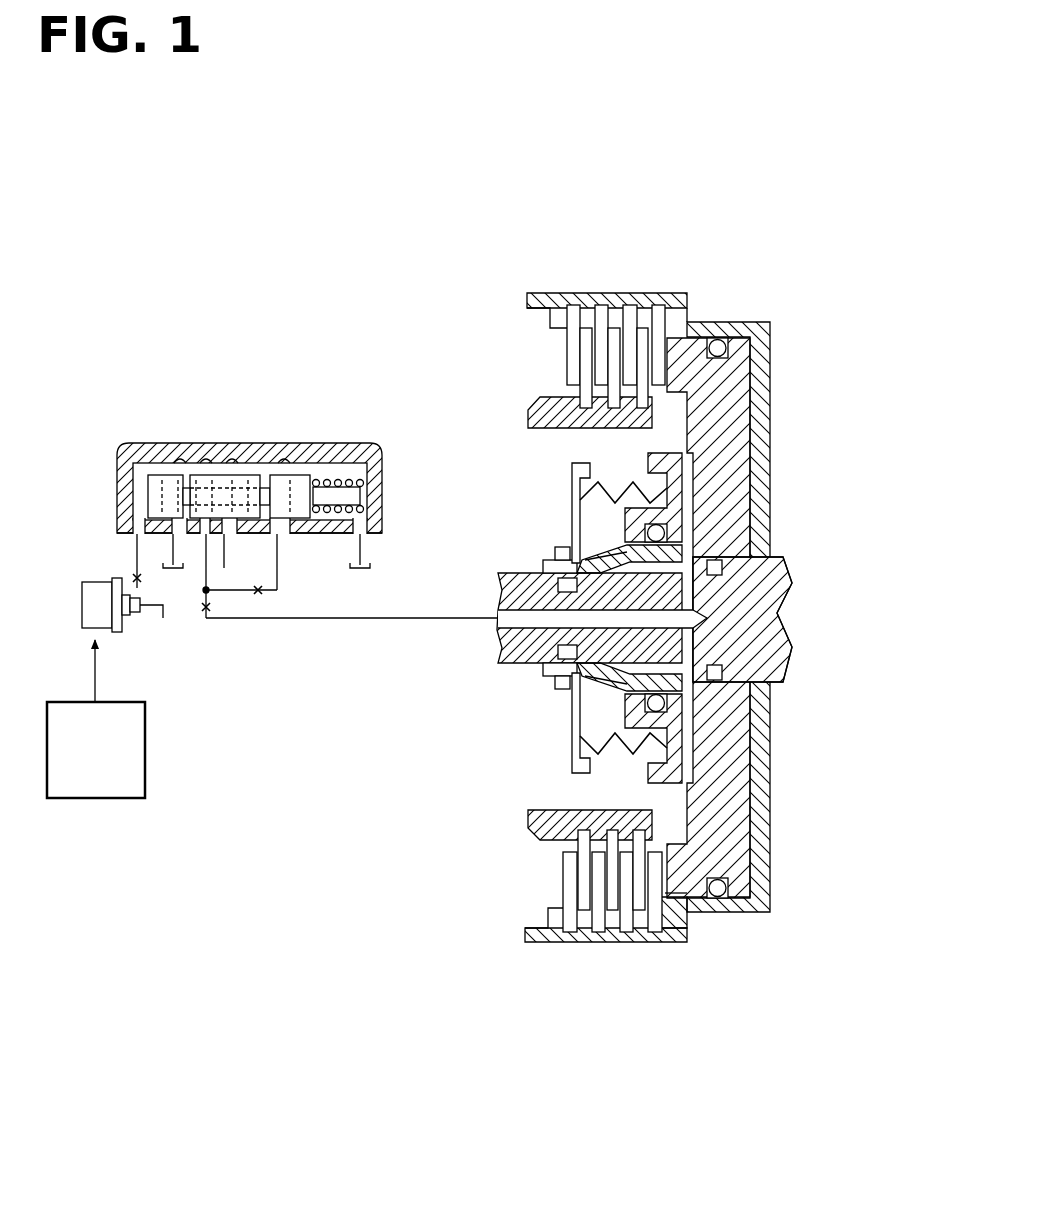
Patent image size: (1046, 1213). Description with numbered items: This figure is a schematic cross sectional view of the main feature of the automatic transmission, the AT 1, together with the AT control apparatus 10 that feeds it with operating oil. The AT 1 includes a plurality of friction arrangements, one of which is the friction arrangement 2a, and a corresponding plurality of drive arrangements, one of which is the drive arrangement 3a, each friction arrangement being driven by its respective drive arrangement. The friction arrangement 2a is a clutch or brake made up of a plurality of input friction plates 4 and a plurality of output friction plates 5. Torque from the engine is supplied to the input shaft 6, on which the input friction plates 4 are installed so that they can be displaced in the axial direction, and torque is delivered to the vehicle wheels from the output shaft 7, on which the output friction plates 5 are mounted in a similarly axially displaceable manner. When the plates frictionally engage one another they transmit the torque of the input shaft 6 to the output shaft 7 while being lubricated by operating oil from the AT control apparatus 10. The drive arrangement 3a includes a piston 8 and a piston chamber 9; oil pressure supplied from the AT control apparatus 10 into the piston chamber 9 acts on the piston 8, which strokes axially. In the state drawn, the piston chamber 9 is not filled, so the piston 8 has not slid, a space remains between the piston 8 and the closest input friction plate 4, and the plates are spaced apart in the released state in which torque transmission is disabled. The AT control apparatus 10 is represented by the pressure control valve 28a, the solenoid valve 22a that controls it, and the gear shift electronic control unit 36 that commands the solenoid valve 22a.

The AT 1 is at (752, 288).
The AT control apparatus 10 is at (90, 458).
The pressure control valve 28a is at (133, 446).
The solenoid valve 22a is at (118, 632).
The gear shift electronic control unit 36 is at (146, 733).
The friction arrangement 2a is at (705, 1005).
The drive arrangement 3a is at (873, 923).
The input friction plate 4 is at (655, 932).
The output friction plate 5 is at (640, 925).
The input shaft 6 is at (525, 933).
The output shaft 7 is at (540, 823).
The piston 8 is at (745, 774).
The piston chamber 9 is at (708, 778).